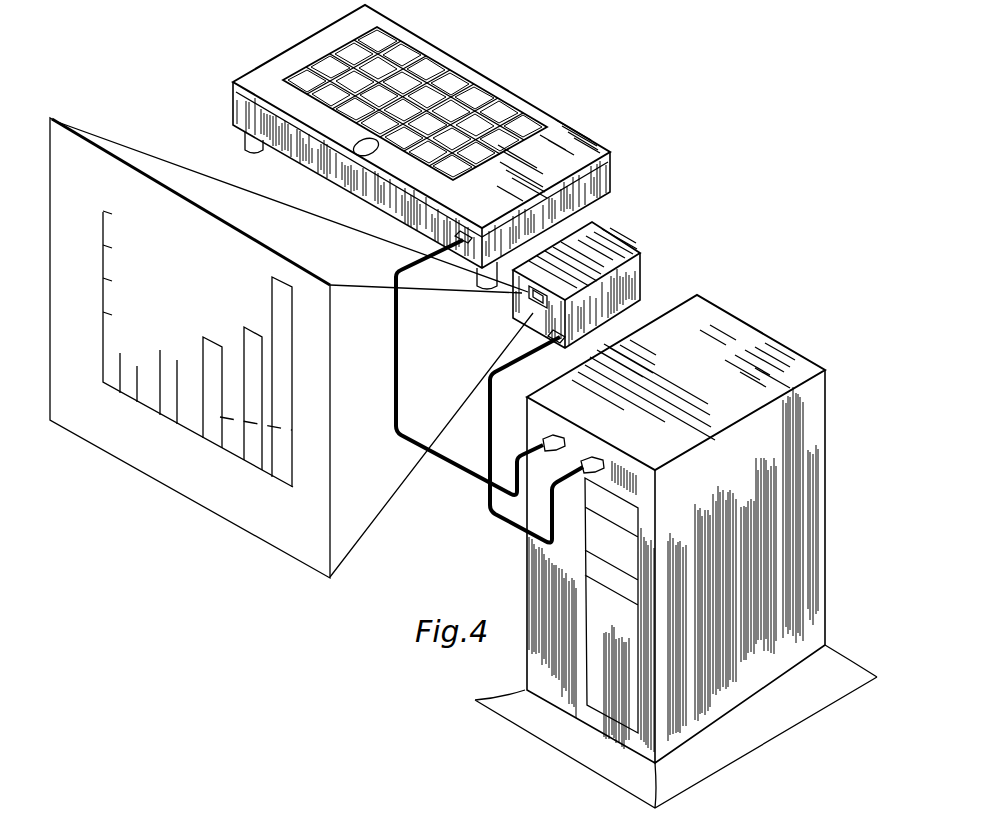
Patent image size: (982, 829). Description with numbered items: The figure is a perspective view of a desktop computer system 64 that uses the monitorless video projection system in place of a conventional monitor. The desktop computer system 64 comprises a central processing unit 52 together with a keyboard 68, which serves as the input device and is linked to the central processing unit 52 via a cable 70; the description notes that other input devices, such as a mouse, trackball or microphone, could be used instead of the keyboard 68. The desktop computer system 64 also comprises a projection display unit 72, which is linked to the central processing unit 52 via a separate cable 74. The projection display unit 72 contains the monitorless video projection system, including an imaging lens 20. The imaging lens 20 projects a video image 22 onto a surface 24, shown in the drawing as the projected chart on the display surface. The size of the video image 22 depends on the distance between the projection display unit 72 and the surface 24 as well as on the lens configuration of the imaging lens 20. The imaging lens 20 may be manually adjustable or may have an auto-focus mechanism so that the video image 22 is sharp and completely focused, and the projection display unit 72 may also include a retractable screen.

The imaging lens 20 is at (528, 297).
The video image 22 is at (247, 497).
The surface 24 is at (55, 145).
The central processing unit 52 is at (712, 390).
The desktop computer system 64 is at (431, 18).
The keyboard 68 is at (406, 95).
The cable 70 is at (395, 370).
The projection display unit 72 is at (613, 253).
The cable 74 is at (487, 415).